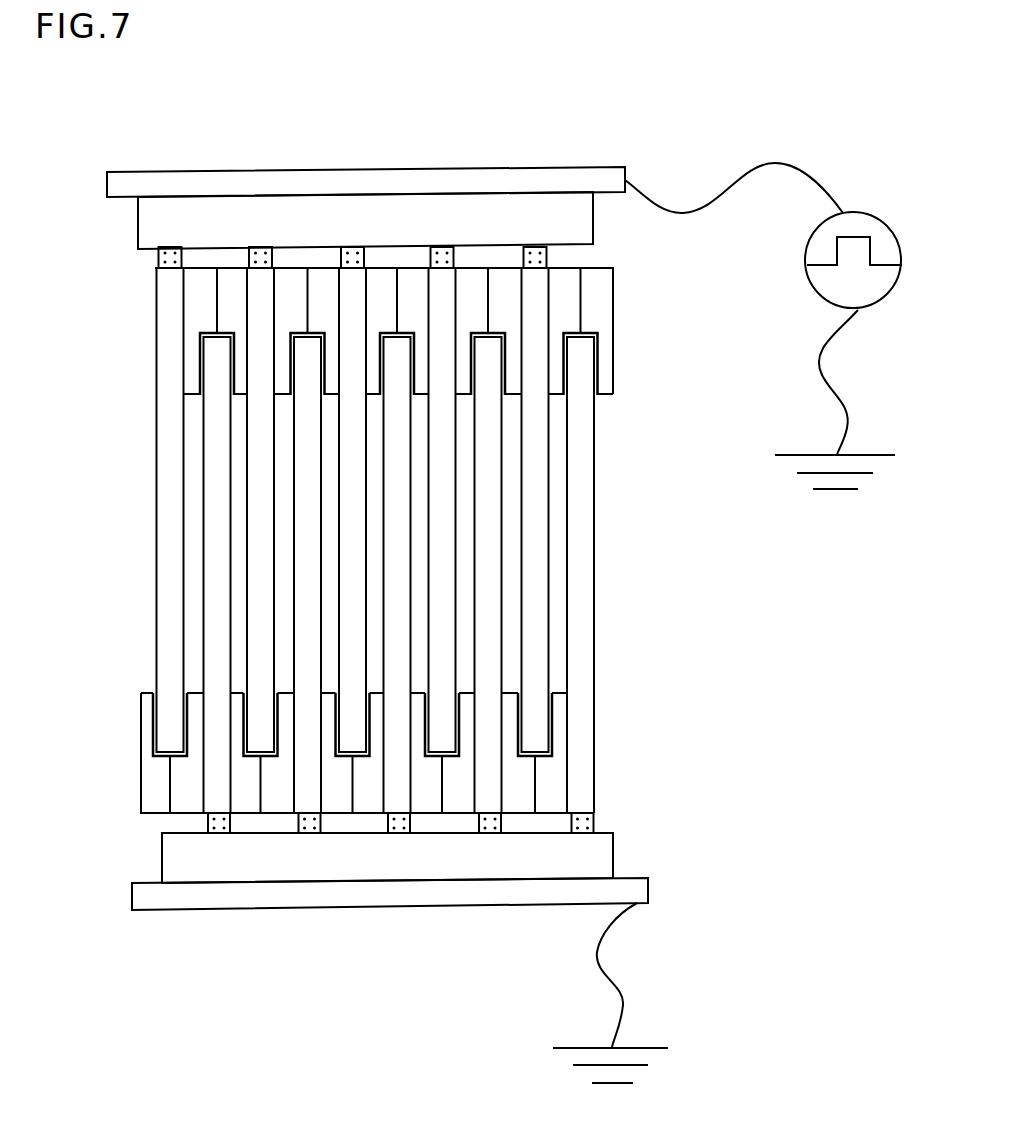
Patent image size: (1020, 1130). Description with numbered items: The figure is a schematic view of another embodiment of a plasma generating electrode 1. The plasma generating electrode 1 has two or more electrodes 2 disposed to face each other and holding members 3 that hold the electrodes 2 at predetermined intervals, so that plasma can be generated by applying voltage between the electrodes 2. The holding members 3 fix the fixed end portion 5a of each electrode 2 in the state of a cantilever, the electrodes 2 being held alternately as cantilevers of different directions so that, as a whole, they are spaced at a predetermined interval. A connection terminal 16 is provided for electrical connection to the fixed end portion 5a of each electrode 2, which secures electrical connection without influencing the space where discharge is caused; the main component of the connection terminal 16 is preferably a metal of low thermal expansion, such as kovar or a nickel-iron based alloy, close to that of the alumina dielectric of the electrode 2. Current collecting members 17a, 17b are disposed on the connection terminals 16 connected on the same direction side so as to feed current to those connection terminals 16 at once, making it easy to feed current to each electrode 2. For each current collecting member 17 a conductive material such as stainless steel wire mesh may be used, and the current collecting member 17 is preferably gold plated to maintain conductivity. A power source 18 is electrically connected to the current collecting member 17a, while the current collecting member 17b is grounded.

The plasma generating electrode 1 is at (340, 117).
The electrode 2 is at (578, 498).
The holding member 3 is at (477, 300).
The fixed end portion 5a is at (550, 726).
The connection terminal 16 is at (537, 258).
The current collecting member 17 is at (377, 535).
The current collecting member 17a is at (467, 230).
The current collecting member 17b is at (227, 852).
The power source 18 is at (823, 253).